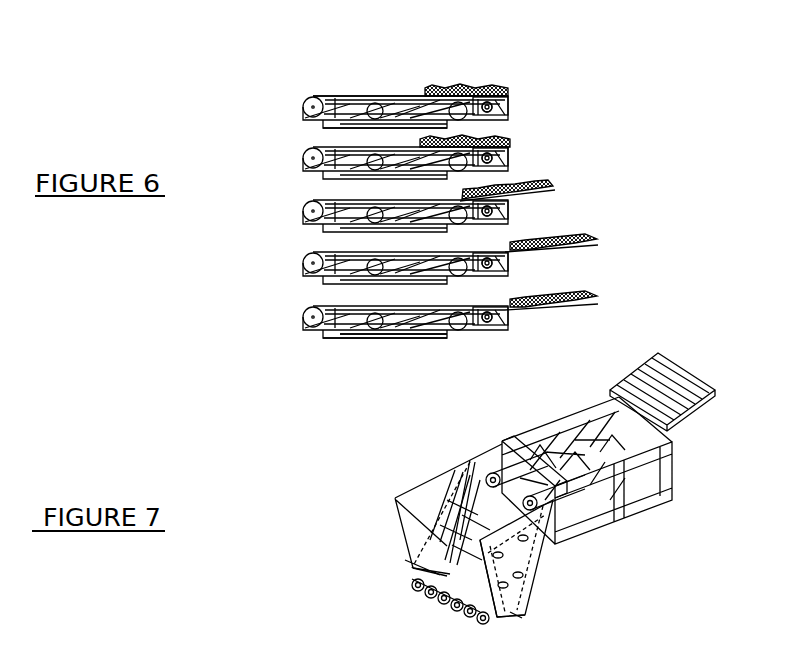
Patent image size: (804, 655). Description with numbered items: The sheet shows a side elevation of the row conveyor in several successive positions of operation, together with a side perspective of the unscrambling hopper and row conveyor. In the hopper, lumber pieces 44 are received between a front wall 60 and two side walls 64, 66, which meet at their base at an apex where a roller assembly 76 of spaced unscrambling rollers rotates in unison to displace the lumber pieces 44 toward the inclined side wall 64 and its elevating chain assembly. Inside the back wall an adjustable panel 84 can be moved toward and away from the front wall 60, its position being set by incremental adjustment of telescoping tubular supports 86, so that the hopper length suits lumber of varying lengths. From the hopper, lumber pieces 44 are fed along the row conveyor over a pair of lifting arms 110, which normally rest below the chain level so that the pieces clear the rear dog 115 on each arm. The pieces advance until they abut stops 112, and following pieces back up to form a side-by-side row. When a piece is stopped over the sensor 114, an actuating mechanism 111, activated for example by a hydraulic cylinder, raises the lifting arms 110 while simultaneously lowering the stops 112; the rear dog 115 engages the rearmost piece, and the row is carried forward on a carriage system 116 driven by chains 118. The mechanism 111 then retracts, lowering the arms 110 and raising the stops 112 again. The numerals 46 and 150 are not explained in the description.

In FIG. 6, the lifting arms 110 is at (553, 246).
In FIG. 7, the actuating mechanism 111 is at (620, 403).
In FIG. 6, the stops 112 is at (490, 100).
In FIG. 6, the sensor 114 is at (433, 93).
In FIG. 6, the rear dog 115 is at (400, 127).
In FIG. 6, the carriage system 116 is at (432, 350).
In FIG. 6, the chains 118 is at (400, 328).
In FIG. 7, the lumber pieces 44 is at (503, 448).
In FIG. 7, the lower member 46 is at (516, 618).
In FIG. 7, the front wall 60 is at (420, 482).
In FIG. 7, the side wall 64 is at (470, 470).
In FIG. 7, the side wall 66 is at (478, 592).
In FIG. 7, the roller assembly 76 is at (487, 636).
In FIG. 7, the adjustable panel 84 is at (520, 565).
In FIG. 7, the telescoping tubular supports 86 is at (503, 587).
In FIG. 7, the drive assembly 150 is at (664, 648).